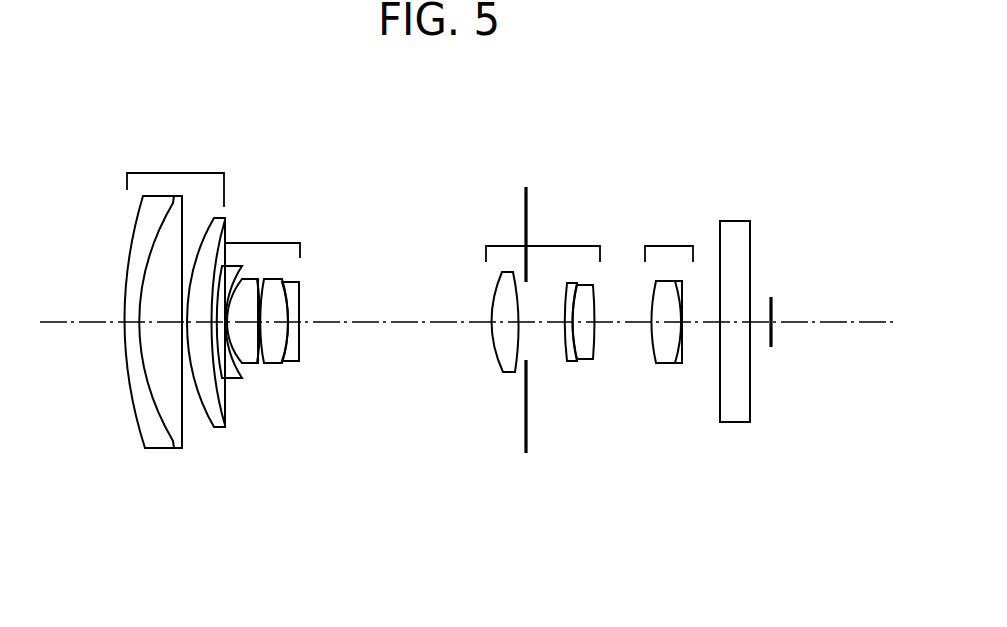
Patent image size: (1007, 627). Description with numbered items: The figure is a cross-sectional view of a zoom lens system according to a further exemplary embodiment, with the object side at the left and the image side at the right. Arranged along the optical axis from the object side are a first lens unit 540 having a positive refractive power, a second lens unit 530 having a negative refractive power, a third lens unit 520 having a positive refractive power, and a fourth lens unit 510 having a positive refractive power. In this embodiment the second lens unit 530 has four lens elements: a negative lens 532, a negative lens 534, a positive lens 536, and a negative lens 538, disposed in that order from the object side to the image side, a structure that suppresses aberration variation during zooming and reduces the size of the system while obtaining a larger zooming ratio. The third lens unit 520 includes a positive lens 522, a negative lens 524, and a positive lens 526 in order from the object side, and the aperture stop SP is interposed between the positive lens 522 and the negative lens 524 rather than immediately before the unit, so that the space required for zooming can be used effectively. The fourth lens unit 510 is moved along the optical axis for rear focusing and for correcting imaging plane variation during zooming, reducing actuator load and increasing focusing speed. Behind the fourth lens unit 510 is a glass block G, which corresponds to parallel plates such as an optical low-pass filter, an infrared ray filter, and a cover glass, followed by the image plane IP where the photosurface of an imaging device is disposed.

The first lens unit L1 540 is at (143, 172).
The second lens unit L2 530 is at (293, 243).
The negative lens 2G1 532 is at (233, 380).
The negative lens 2G2 534 is at (253, 365).
The positive lens 2G3 536 is at (273, 365).
The negative lens 2G4 538 is at (293, 281).
The third lens unit L3 520 is at (503, 245).
The positive lens 3G1 522 is at (507, 373).
The negative lens 3G2 524 is at (575, 360).
The positive lens 3G3 526 is at (583, 360).
The fourth lens unit L4 510 is at (650, 245).
The aperture stop SP is at (527, 200).
The glass block G is at (735, 230).
The image plane IP is at (773, 310).